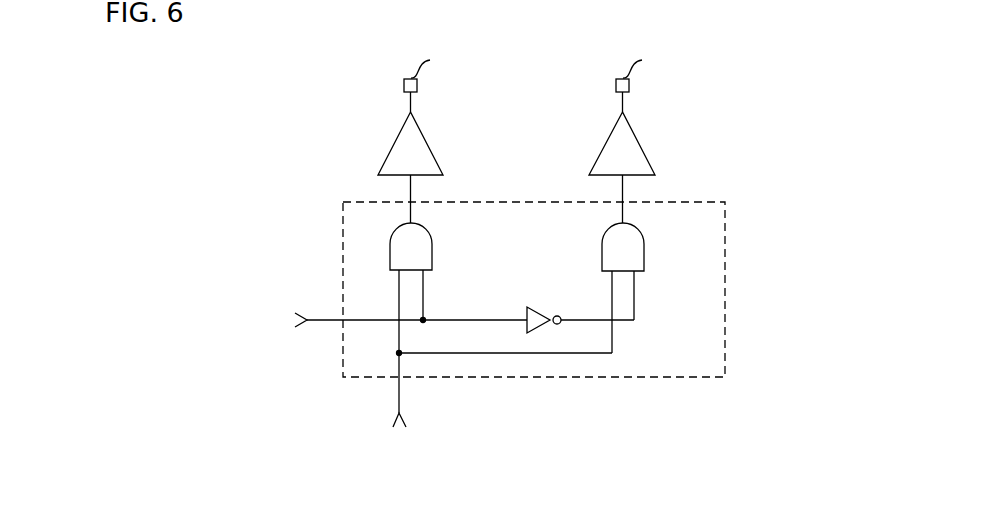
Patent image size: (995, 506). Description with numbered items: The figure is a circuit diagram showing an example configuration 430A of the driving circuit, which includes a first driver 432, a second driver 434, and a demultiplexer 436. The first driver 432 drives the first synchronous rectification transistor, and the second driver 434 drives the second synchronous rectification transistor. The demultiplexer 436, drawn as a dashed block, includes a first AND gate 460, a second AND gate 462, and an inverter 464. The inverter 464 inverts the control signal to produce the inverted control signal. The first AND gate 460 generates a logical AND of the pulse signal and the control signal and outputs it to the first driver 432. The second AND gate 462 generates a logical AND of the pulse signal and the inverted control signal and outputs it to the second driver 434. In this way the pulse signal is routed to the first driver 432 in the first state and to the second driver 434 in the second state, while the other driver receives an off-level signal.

The example configuration of the driving circuit 430A is at (548, 480).
The first driver 432 is at (427, 133).
The second driver 434 is at (639, 133).
The demultiplexer 436 is at (727, 250).
The first AND gate 460 is at (433, 245).
The second AND gate 462 is at (645, 245).
The inverter 464 is at (537, 306).